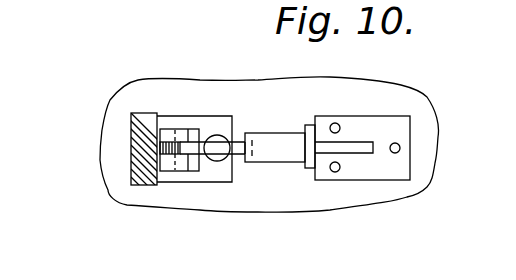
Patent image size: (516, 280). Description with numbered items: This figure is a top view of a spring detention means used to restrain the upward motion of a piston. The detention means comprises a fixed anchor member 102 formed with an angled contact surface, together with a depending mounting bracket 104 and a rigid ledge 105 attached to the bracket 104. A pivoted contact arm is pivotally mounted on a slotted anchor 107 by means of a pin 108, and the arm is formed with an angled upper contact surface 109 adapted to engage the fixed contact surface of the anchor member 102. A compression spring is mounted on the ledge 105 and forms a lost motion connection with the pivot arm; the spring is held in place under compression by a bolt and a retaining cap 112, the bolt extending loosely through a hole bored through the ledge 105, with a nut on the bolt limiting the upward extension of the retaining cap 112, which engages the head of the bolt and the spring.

The fixed anchor member 102 is at (363, 145).
The depending mounting bracket 104 is at (130, 132).
The rigid ledge 105 is at (200, 180).
The slotted anchor 107 is at (162, 135).
The pin 108 is at (175, 148).
The angled upper contact surface 109 is at (232, 149).
The retaining cap 112 is at (218, 135).